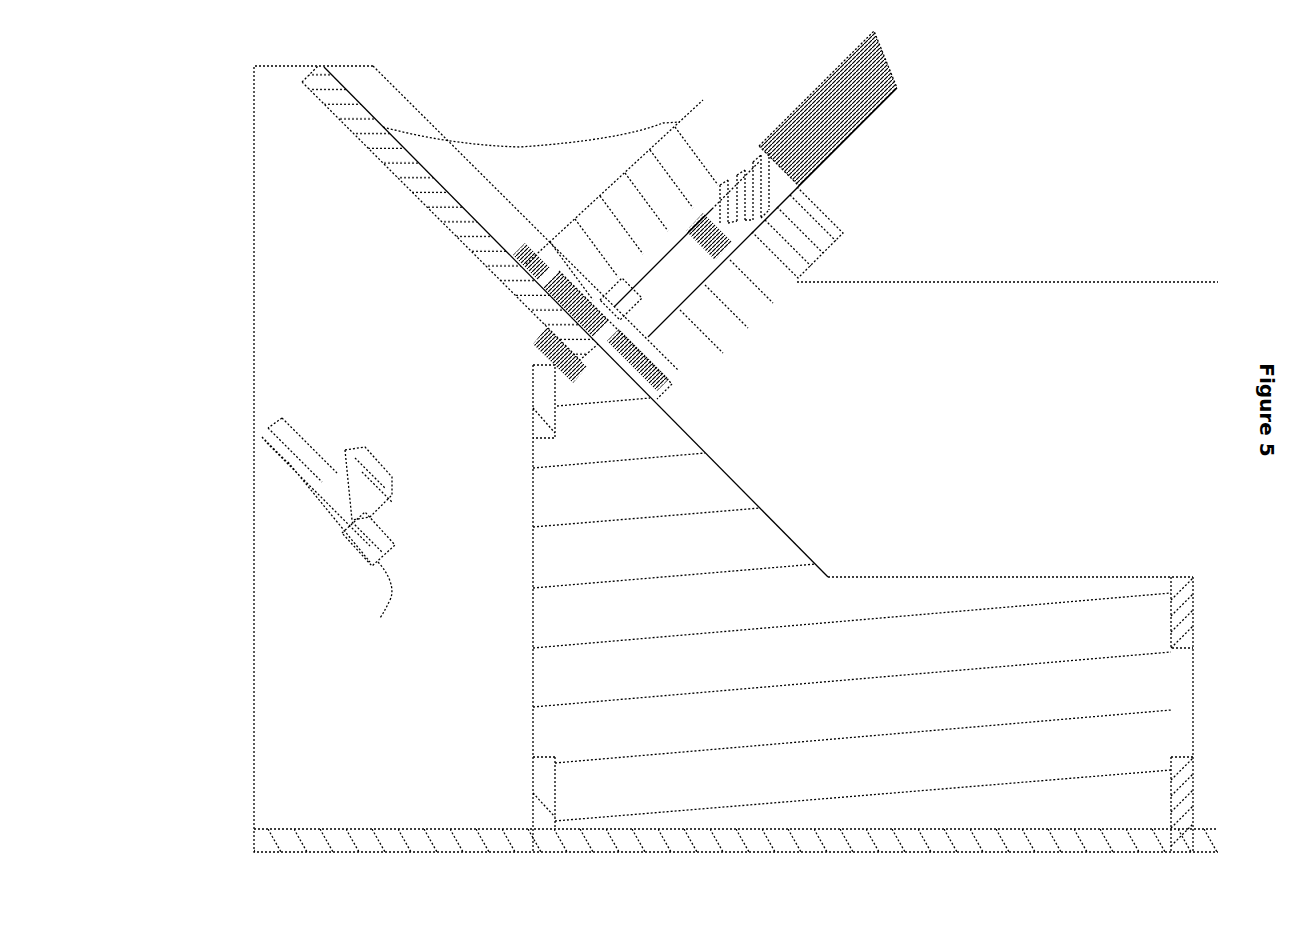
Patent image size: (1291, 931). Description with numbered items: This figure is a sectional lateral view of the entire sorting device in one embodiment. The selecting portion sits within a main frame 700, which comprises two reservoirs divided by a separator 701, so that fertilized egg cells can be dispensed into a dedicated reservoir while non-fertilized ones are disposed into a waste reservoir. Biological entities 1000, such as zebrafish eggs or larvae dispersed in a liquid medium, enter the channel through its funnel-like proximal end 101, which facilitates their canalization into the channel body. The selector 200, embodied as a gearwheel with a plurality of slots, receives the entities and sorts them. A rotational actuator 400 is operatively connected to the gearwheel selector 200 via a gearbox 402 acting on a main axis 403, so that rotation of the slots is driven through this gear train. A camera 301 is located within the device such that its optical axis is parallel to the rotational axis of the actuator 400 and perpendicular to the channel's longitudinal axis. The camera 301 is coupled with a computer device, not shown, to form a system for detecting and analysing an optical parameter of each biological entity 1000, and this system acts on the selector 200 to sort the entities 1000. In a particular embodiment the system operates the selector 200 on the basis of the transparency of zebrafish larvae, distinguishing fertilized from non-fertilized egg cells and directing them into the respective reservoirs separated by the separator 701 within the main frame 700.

The funnel-like proximal end 101 is at (498, 222).
The gearbox 402 is at (752, 160).
The rotational actuator 400 is at (817, 137).
The biological entities 1000 is at (523, 263).
The main axis 403 is at (690, 245).
The selector 200 is at (648, 372).
The camera 301 is at (302, 473).
The separator 701 is at (727, 535).
The main frame 700 is at (1188, 607).